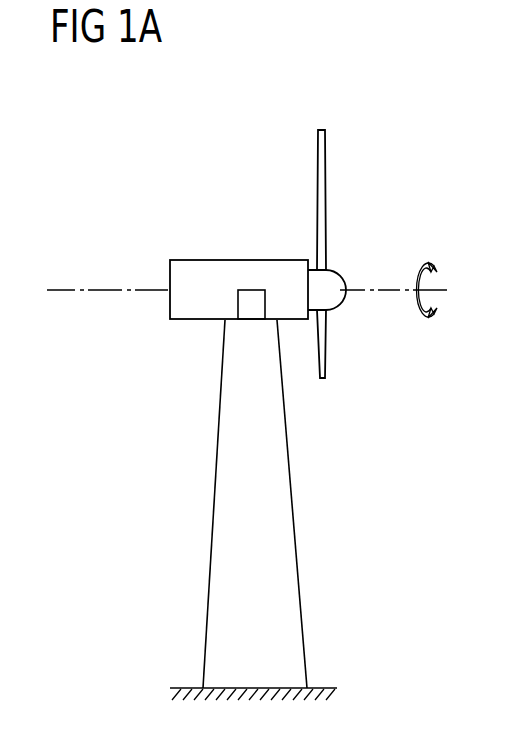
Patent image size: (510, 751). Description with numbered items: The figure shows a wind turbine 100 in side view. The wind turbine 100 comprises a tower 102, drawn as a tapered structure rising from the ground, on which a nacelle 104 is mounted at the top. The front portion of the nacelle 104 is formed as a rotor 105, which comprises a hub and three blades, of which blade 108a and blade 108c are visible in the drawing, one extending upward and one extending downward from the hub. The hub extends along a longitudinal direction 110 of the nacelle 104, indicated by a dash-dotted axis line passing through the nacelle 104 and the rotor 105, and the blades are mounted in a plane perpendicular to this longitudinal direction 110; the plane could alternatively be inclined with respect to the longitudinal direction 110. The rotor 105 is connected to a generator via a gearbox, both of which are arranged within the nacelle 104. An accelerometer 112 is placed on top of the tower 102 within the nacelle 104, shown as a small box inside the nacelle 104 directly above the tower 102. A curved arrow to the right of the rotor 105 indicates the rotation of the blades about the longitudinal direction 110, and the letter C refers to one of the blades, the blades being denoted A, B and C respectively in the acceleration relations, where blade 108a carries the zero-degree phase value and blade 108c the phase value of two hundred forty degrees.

The wind turbine 100 is at (176, 187).
The tower 102 is at (283, 519).
The nacelle 104 is at (193, 311).
The rotor 105 is at (327, 293).
The blade 108a is at (322, 360).
The blade 108c is at (322, 232).
The longitudinal direction 110 is at (93, 290).
The accelerometer 112 is at (250, 298).
The blade designation C is at (322, 178).